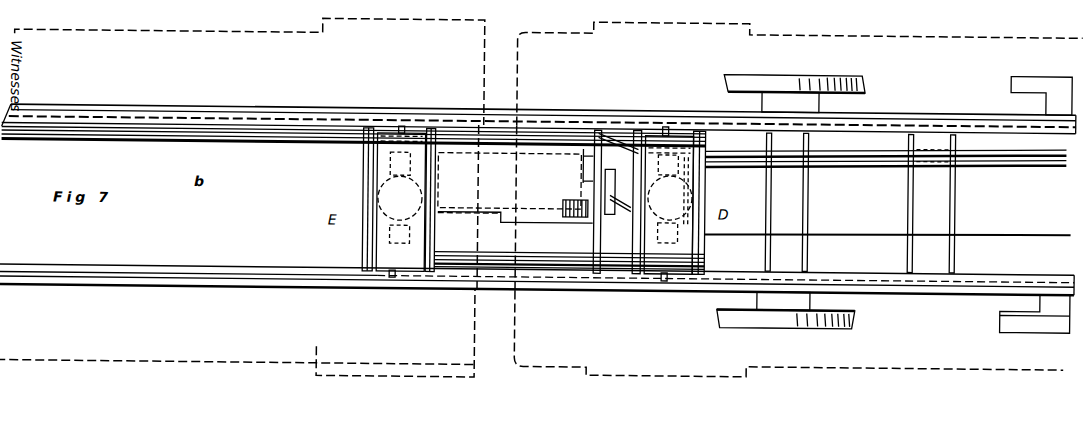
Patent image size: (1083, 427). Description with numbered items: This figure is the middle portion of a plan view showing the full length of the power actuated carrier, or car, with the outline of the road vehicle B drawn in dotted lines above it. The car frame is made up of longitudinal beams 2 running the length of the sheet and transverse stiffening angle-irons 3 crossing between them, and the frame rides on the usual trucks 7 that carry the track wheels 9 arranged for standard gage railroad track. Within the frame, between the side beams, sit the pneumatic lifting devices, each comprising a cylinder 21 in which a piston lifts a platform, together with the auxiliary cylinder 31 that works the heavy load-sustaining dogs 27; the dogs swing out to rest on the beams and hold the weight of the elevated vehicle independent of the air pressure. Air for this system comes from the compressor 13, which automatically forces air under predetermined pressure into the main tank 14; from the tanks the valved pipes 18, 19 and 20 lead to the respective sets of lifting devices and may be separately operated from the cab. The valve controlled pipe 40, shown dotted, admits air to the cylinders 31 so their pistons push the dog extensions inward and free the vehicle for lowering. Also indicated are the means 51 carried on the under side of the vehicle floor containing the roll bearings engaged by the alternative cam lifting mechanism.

The valve controlled pipe 40 is at (214, 107).
The longitudinal beams 2 is at (287, 108).
The valved pipe 20 is at (130, 141).
The valved pipe 19 is at (309, 142).
The transverse stiffening angle-irons 3 is at (364, 178).
The cylinder 21 is at (363, 193).
The dogs 27 is at (403, 122).
The compressor 13 is at (538, 178).
The main tank 14 is at (569, 253).
The cylinder 31 is at (697, 170).
The means containing roll bearings 51 is at (533, 242).
The valved pipe 18 is at (1036, 157).
The trucks 7 is at (810, 208).
The wheels 9 is at (724, 74).
The road vehicle B is at (150, 363).